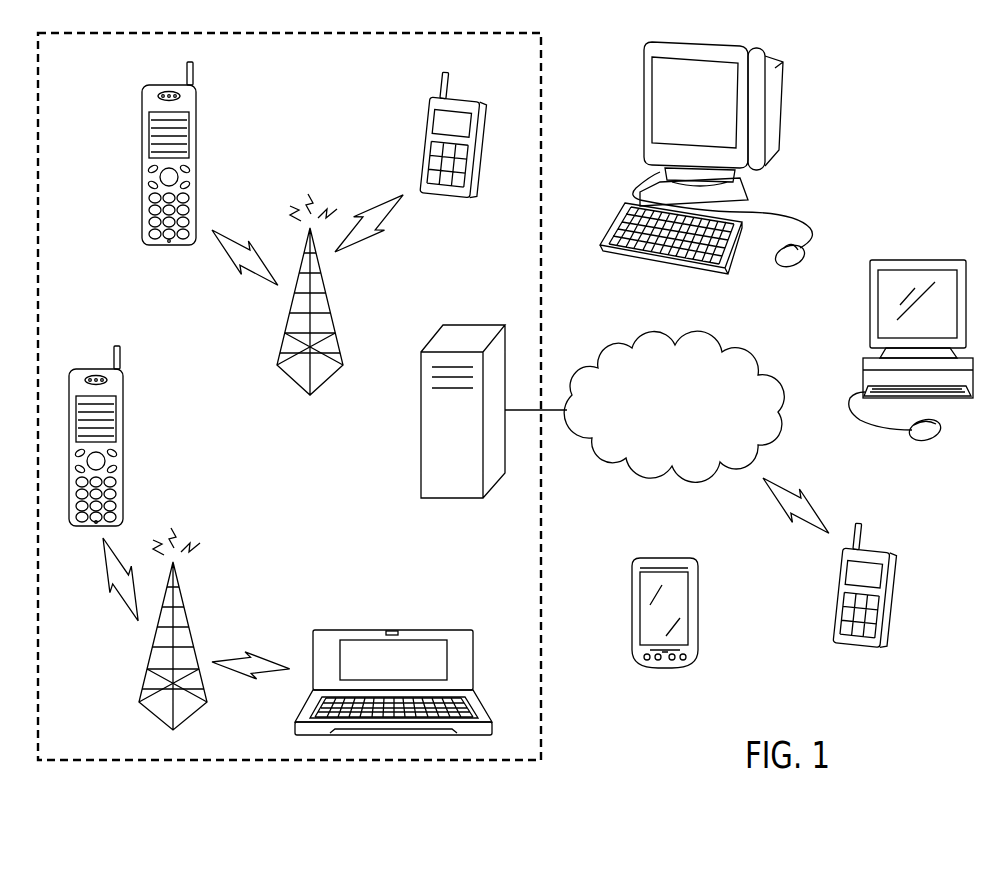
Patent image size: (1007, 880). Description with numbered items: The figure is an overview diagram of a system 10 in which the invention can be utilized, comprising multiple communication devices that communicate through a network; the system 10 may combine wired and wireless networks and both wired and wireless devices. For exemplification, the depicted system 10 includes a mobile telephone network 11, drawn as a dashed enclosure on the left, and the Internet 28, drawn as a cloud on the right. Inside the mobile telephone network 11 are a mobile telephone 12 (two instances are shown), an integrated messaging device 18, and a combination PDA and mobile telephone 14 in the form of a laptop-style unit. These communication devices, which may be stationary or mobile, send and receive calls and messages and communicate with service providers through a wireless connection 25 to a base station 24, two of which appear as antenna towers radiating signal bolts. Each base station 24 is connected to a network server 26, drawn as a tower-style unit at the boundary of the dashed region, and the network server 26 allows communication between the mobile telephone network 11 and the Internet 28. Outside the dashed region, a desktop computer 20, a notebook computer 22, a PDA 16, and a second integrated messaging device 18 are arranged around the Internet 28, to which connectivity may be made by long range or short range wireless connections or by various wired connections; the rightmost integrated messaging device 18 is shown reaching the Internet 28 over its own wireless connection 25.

The system 10 is at (958, 507).
The mobile telephone network 11 is at (75, 77).
The mobile telephone 12 is at (198, 165).
The combination PDA and mobile telephone 14 is at (392, 633).
The PDA 16 is at (700, 610).
The integrated messaging device 18 is at (423, 142).
The desktop computer 20 is at (785, 92).
The notebook computer 22 is at (918, 258).
The base station 24 is at (328, 295).
The wireless connection 25 is at (120, 603).
The network server 26 is at (420, 425).
The Internet 28 is at (710, 343).